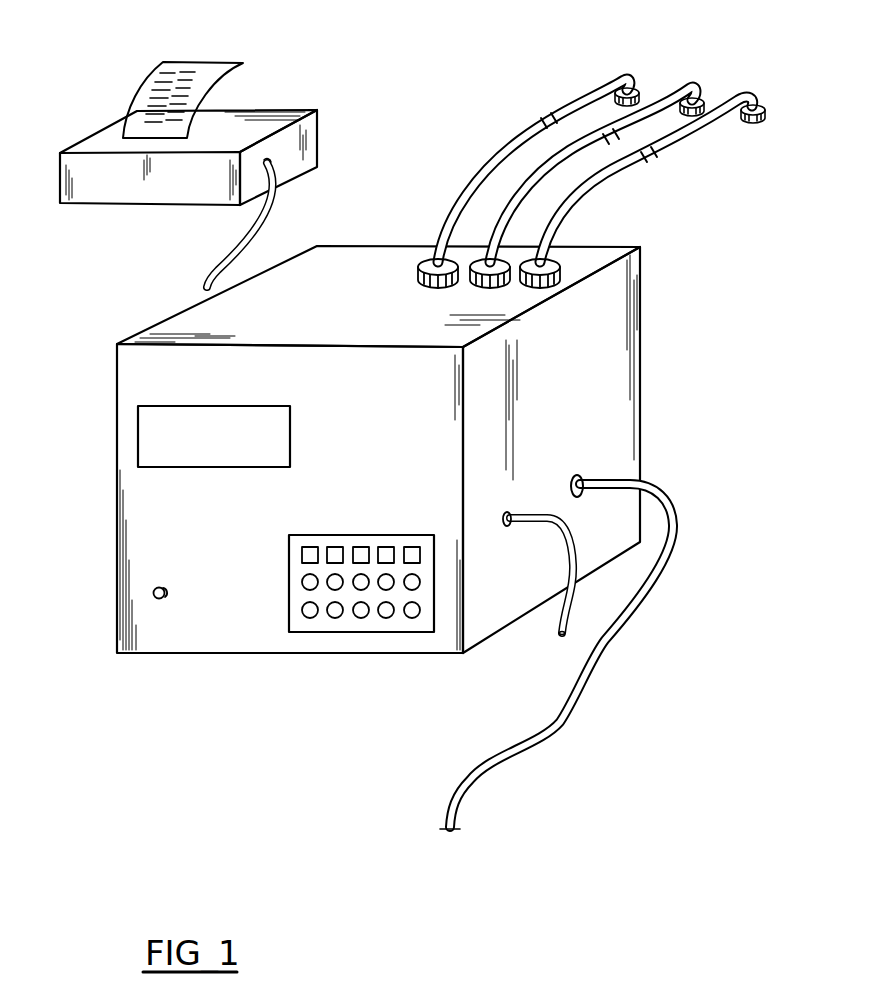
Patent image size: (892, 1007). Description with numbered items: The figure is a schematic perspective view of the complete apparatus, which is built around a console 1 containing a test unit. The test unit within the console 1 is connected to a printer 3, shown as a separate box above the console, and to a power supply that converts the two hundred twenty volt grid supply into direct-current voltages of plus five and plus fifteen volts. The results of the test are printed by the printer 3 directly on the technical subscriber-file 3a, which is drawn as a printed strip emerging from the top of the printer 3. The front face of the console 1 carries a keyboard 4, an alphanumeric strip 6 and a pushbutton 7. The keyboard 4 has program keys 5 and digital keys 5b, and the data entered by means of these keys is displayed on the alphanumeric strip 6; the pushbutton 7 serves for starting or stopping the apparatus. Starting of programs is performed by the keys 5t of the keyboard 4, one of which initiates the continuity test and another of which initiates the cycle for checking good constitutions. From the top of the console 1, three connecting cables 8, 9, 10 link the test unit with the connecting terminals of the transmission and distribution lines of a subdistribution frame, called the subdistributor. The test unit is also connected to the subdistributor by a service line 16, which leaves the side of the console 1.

The console 1 is at (617, 385).
The printer 3 is at (188, 114).
The technical subscriber-file 3a is at (203, 72).
The keyboard 4 is at (346, 602).
The program keys 5 is at (311, 548).
The digital keys 5b is at (386, 583).
The keys for starting programs 5t is at (418, 640).
The alphanumeric strip 6 is at (153, 438).
The pushbutton 7 is at (152, 595).
The connecting cable 8 is at (483, 178).
The connecting cable 9 is at (550, 172).
The connecting cable 10 is at (598, 192).
The service line 16 is at (552, 618).